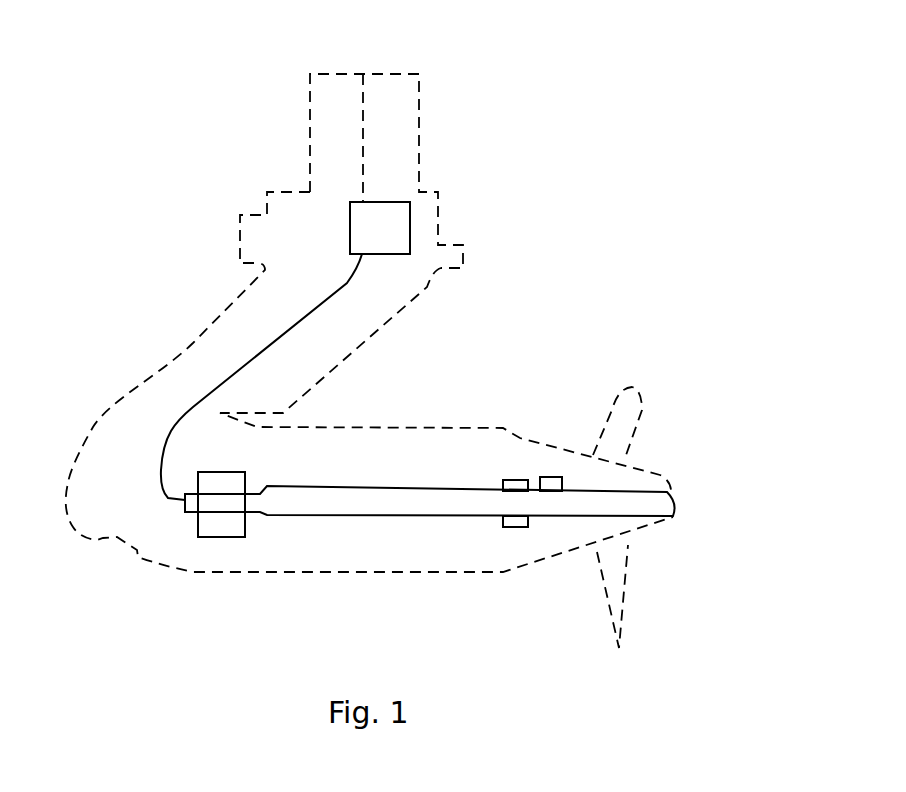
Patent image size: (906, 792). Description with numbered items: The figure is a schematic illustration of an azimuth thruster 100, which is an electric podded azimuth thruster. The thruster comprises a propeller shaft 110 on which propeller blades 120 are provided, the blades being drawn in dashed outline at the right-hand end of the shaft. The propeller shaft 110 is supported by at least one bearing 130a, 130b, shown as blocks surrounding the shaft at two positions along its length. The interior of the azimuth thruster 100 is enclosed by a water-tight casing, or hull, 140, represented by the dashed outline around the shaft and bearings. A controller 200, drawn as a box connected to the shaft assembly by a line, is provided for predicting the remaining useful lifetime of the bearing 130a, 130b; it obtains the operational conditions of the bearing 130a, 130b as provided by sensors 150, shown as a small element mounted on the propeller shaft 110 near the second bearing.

The azimuth thruster 100 is at (655, 67).
The propeller shaft 110 is at (364, 488).
The propeller blades 120 is at (632, 426).
The bearing 130a is at (230, 520).
The bearing 130b is at (515, 522).
The water-tight casing 140 is at (197, 337).
The sensors 150 is at (548, 478).
The controller 200 is at (383, 230).